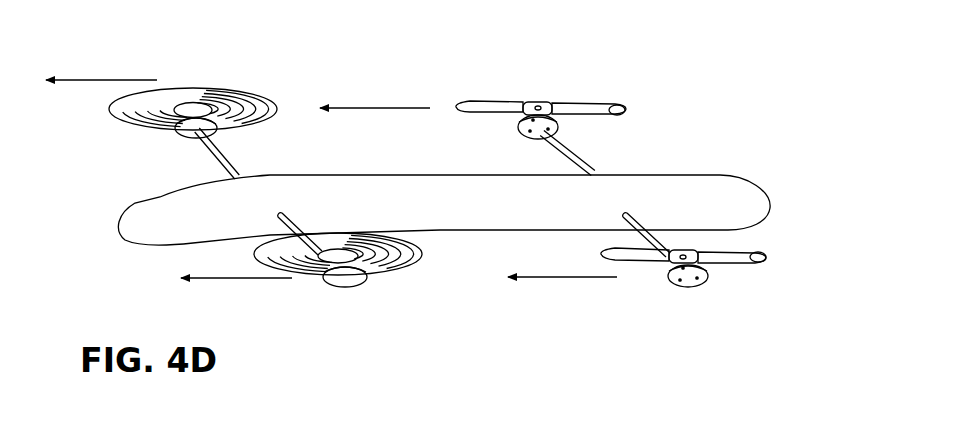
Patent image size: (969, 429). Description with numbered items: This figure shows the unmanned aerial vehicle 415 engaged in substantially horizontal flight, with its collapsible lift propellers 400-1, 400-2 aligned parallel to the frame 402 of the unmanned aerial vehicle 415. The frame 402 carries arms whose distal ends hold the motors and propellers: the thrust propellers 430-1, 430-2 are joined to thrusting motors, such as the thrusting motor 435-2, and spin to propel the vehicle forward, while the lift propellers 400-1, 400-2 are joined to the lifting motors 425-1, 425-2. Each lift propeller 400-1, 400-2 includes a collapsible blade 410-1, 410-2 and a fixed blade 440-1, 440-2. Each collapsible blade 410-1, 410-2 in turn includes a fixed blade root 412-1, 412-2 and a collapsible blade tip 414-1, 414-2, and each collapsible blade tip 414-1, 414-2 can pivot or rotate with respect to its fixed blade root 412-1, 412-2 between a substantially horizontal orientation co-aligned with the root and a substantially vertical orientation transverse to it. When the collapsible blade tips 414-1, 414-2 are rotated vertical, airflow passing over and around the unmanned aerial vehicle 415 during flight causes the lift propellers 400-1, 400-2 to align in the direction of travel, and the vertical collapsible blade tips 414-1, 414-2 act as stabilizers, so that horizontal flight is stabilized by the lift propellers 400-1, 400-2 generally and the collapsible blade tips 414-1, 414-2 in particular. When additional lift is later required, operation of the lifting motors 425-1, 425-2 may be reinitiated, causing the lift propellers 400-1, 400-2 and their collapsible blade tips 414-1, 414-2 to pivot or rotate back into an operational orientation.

The frame 402 is at (740, 197).
The unmanned aerial vehicle 415 is at (91, 159).
The thrust propeller 430-1 is at (225, 95).
The lifting motor 425-1 is at (187, 138).
The collapsible blade 410-1 is at (545, 103).
The fixed blade 440-1 is at (470, 108).
The fixed blade root 412-1 is at (573, 105).
The collapsible blade tip 414-1 is at (617, 117).
The lift propeller 400-1 is at (652, 92).
The thrust propeller 430-2 is at (383, 267).
The thrusting motor 435-2 is at (333, 283).
The collapsible blade 410-2 is at (668, 286).
The fixed blade 440-2 is at (608, 250).
The fixed blade root 412-2 is at (735, 262).
The collapsible blade tip 414-2 is at (783, 240).
The lifting motor 425-2 is at (675, 283).
The lift propeller 400-2 is at (657, 317).